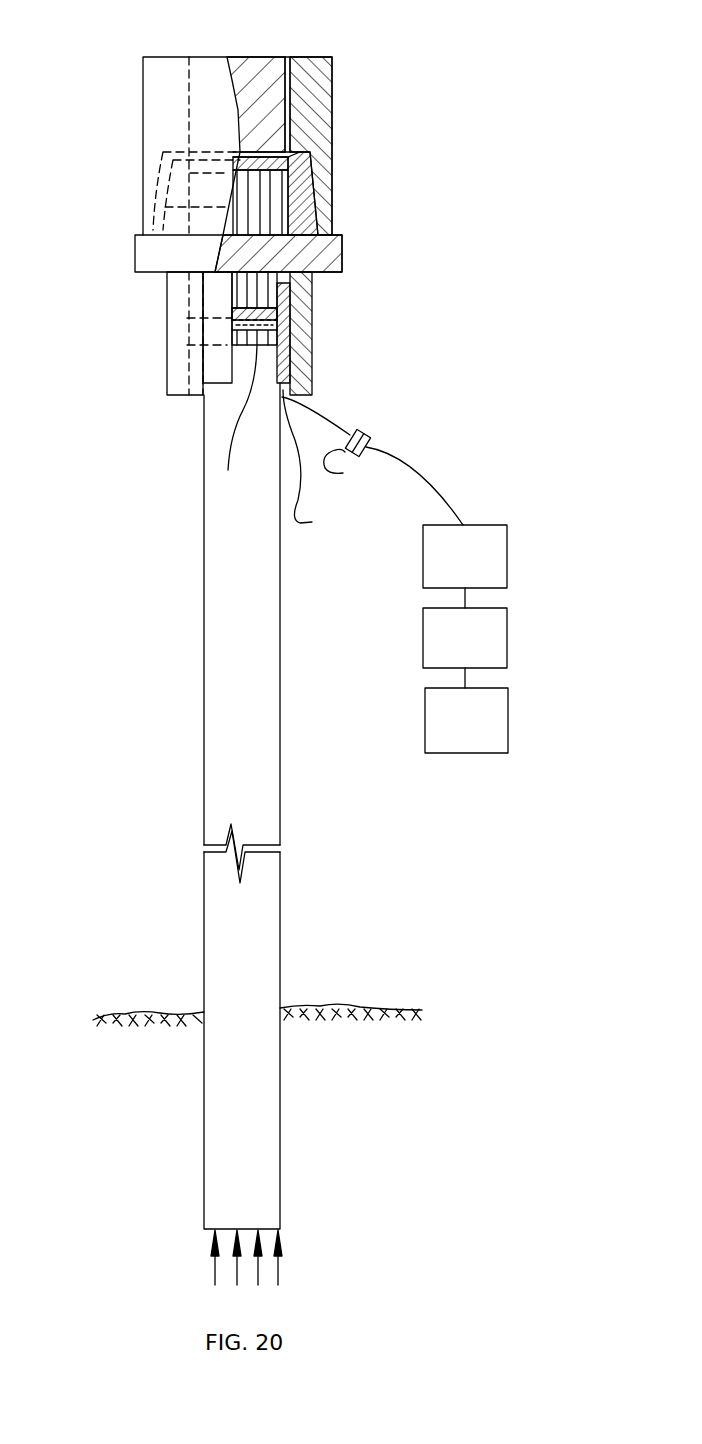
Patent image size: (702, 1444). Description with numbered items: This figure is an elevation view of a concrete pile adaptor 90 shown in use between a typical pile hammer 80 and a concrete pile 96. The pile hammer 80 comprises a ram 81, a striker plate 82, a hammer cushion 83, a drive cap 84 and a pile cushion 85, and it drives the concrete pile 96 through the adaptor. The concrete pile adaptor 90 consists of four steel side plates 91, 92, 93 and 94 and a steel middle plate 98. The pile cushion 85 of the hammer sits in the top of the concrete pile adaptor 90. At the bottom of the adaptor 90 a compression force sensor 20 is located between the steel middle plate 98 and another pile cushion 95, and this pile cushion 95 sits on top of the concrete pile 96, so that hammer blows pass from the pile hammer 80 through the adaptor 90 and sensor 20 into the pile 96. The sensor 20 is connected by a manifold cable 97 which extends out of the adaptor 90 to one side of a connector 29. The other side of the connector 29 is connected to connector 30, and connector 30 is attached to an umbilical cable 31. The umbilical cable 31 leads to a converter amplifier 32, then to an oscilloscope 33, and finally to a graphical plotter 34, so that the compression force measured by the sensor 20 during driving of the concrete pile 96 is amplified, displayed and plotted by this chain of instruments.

The compression force sensor 20 is at (300, 337).
The connector 29 is at (347, 468).
The connector 30 is at (372, 436).
The umbilical cable 31 is at (440, 490).
The converter amplifier 32 is at (507, 525).
The oscilloscope 33 is at (507, 608).
The graphical plotter 34 is at (508, 688).
The pile hammer 80 is at (333, 63).
The ram 81 is at (272, 57).
The striker plate 82 is at (300, 150).
The hammer cushion 83 is at (287, 183).
The drive cap 84 is at (340, 235).
The pile cushion 85 is at (263, 284).
The concrete pile adaptor 90 is at (311, 462).
The steel side plate 91 is at (192, 338).
The steel side plate 92 is at (197, 288).
The steel side plate 93 is at (300, 310).
The steel side plate 94 is at (192, 397).
The pile cushion 95 is at (240, 413).
The concrete pile 96 is at (218, 767).
The manifold cable 97 is at (313, 415).
The steel middle plate 98 is at (233, 318).